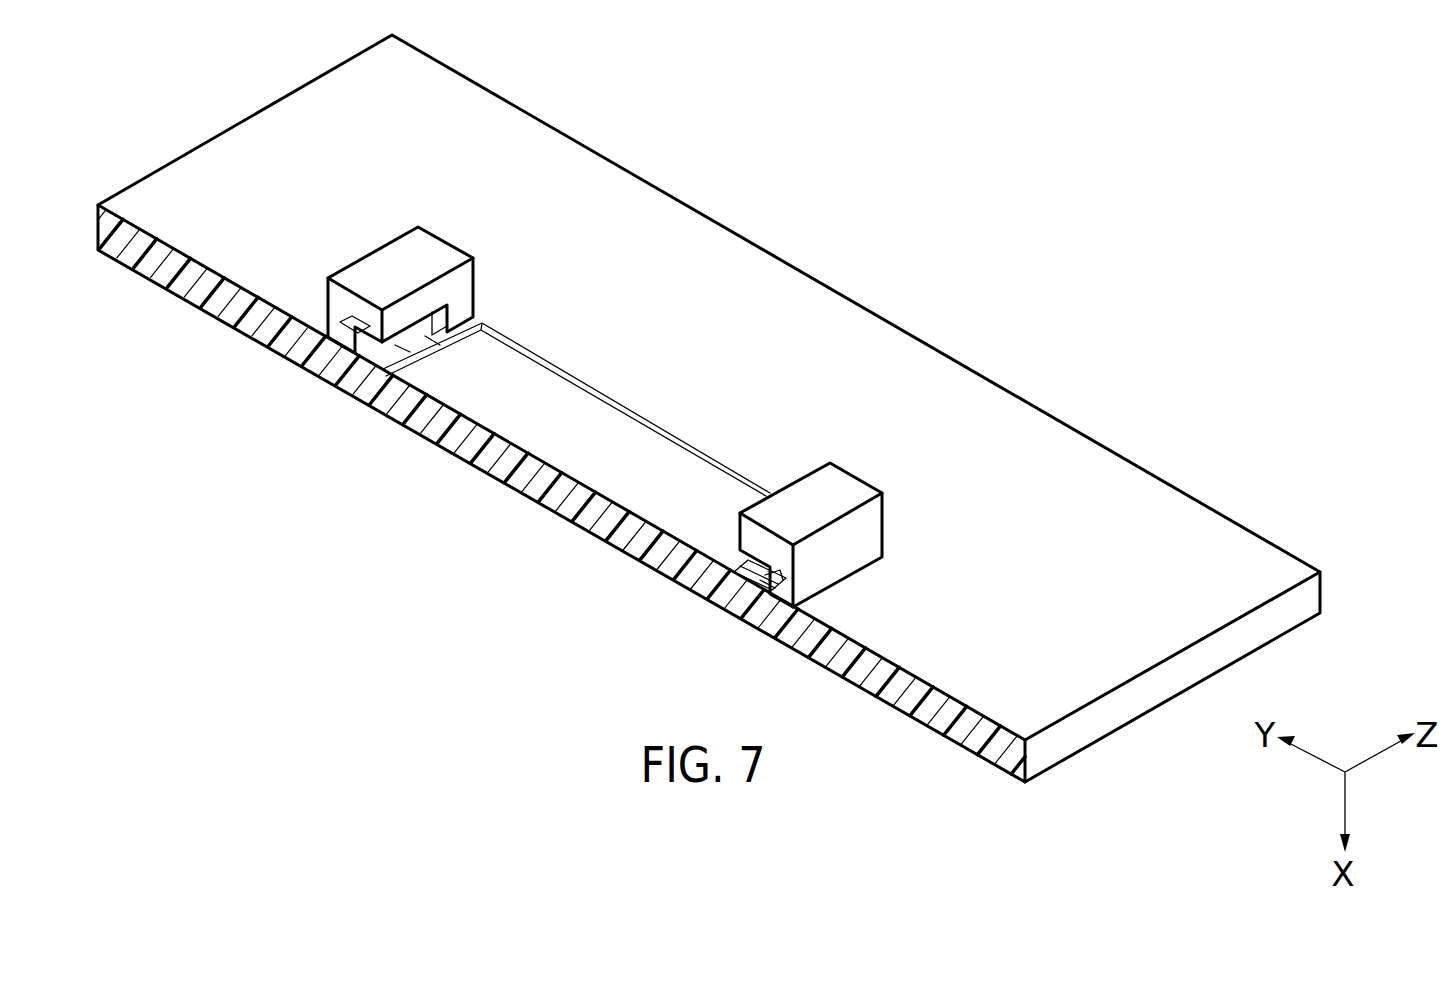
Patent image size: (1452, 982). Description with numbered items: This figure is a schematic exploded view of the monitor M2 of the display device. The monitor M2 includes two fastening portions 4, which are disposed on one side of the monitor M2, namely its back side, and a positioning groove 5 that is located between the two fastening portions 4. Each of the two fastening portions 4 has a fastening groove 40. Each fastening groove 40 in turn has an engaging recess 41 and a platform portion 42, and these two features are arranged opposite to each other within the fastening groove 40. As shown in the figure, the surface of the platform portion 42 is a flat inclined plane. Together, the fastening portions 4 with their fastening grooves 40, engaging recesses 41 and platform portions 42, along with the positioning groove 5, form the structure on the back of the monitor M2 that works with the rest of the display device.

The monitor M2 is at (892, 236).
The fastening portion 4 is at (384, 253).
The positioning groove 5 is at (615, 446).
The fastening groove 40 is at (431, 333).
The engaging recess 41 is at (348, 327).
The platform portion 42 is at (399, 349).